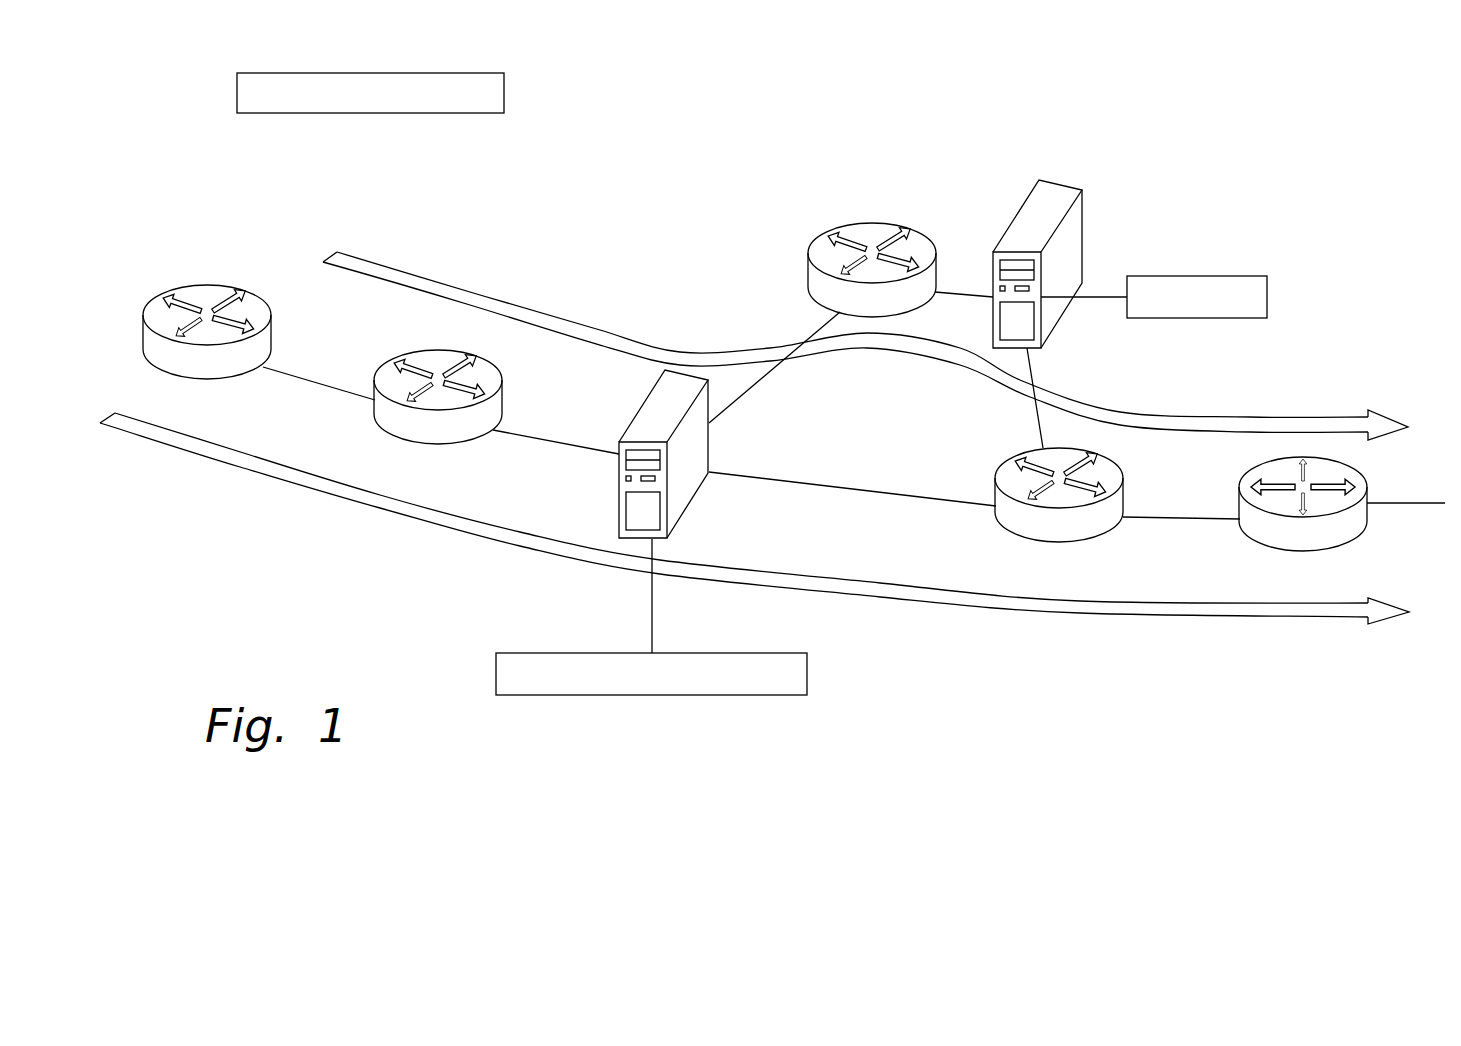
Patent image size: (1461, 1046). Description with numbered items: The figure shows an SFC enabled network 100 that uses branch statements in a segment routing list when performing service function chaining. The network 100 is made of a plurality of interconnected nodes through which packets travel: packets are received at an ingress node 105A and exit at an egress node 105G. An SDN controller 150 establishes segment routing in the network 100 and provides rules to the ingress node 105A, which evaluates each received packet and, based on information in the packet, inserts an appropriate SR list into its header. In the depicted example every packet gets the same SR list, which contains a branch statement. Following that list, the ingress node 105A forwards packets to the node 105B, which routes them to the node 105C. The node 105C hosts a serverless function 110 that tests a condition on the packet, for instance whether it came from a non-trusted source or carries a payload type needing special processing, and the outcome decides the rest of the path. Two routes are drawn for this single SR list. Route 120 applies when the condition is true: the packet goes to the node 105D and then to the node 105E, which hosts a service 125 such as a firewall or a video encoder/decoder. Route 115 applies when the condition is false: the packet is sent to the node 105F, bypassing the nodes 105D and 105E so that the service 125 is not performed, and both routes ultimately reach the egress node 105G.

The SFC enabled network 100 is at (1232, 124).
The ingress node 105A is at (272, 338).
The node 105B is at (503, 400).
The node 105C is at (710, 458).
The node 105D is at (810, 262).
The node 105E is at (1083, 198).
The node 105F is at (1123, 490).
The egress node 105G is at (1367, 497).
The serverless function 110 is at (807, 668).
The route 115 is at (1130, 620).
The route 120 is at (1307, 418).
The service 125 is at (1267, 290).
The SDN controller 150 is at (504, 88).